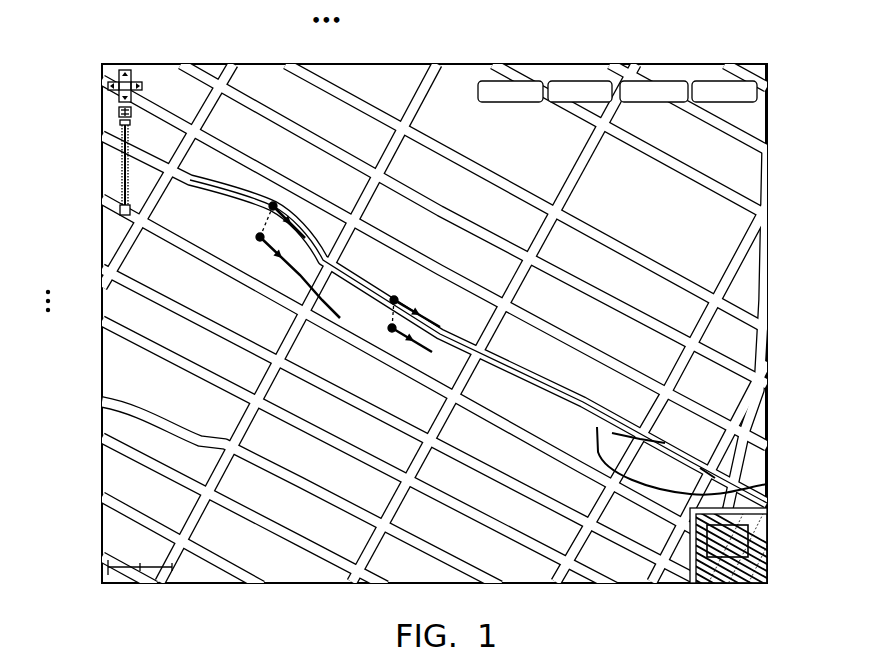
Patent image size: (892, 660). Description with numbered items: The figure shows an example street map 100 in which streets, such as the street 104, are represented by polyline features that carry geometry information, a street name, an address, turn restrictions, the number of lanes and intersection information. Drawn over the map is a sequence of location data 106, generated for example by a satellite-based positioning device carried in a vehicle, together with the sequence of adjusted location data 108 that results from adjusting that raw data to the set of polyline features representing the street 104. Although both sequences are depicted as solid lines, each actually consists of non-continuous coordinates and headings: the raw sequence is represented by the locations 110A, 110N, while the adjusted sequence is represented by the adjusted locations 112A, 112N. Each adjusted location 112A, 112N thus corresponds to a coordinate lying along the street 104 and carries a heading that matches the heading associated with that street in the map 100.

The street map 100 is at (651, 33).
The adjusted location 112A is at (273, 206).
The adjusted location 112N is at (394, 300).
The location 110A is at (260, 237).
The location 110N is at (392, 328).
The sequence of adjusted location data 108 is at (665, 443).
The street 104 is at (710, 475).
The sequence of location data 106 is at (767, 484).